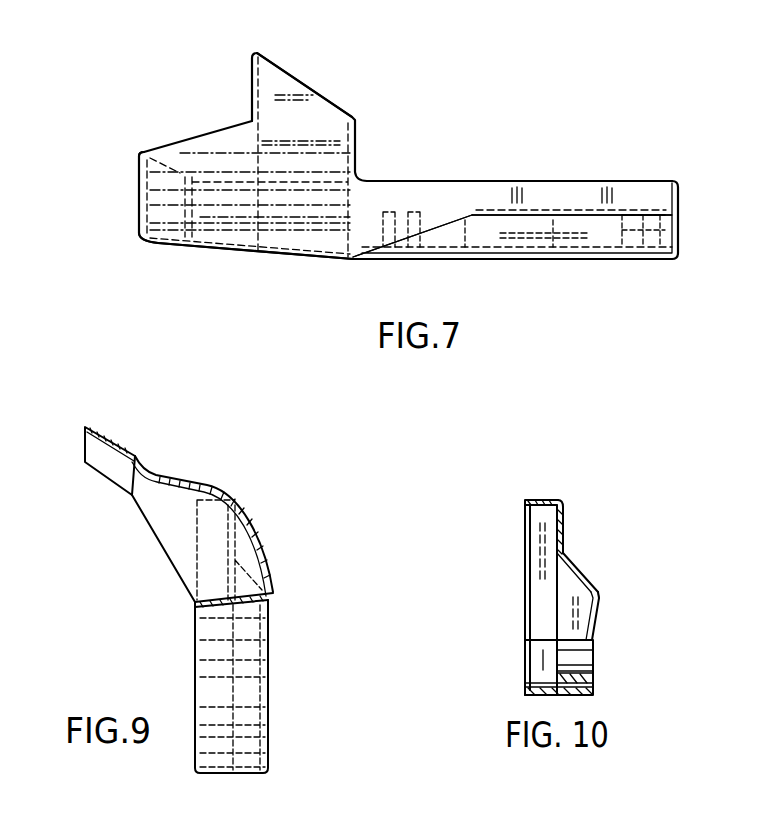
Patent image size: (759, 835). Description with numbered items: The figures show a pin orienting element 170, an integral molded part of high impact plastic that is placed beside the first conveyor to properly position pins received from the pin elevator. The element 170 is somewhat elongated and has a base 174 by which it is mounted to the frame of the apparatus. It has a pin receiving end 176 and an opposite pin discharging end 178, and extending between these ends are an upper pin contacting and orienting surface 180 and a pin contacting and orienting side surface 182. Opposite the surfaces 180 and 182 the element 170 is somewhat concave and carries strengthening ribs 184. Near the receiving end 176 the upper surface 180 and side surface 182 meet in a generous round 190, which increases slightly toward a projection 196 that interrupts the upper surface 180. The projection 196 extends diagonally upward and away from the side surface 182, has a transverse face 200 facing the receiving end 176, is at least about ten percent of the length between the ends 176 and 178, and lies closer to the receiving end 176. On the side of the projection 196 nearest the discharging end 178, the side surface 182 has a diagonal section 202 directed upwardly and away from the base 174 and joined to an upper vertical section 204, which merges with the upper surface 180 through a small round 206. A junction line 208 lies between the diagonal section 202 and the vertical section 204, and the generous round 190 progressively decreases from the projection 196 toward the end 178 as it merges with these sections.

In FIG. 7, the pin orienting element 170 is at (490, 173).
In FIG. 9, the base 174 is at (245, 695).
In FIG. 10, the base 174 is at (593, 627).
In FIG. 7, the pin receiving end 176 is at (135, 208).
In FIG. 7, the pin discharging end 178 is at (3, 173).
In FIG. 7, the upper pin contacting and orienting surface 180 is at (573, 197).
In FIG. 9, the upper pin contacting and orienting surface 180 is at (175, 470).
In FIG. 10, the upper pin contacting and orienting surface 180 is at (532, 500).
In FIG. 7, the pin contacting and orienting side surface 182 is at (313, 262).
In FIG. 9, the pin contacting and orienting side surface 182 is at (278, 595).
In FIG. 10, the pin contacting and orienting side surface 182 is at (598, 600).
In FIG. 7, the strengthening ribs 184 is at (150, 252).
In FIG. 9, the generous round 190 is at (197, 469).
In FIG. 7, the projection 196 is at (313, 85).
In FIG. 9, the projection 196 is at (102, 423).
In FIG. 7, the transverse face 200 is at (250, 88).
In FIG. 7, the diagonal section 202 is at (593, 237).
In FIG. 10, the diagonal section 202 is at (583, 577).
In FIG. 7, the upper vertical section 204 is at (655, 232).
In FIG. 10, the upper vertical section 204 is at (563, 520).
In FIG. 10, the small round 206 is at (557, 502).
In FIG. 7, the junction line 208 is at (430, 247).
In FIG. 10, the junction line 208 is at (568, 567).